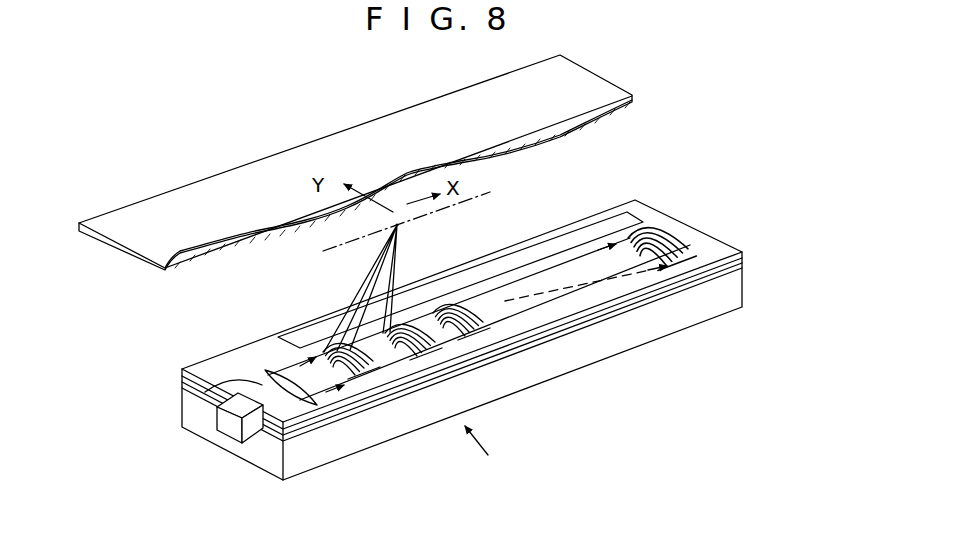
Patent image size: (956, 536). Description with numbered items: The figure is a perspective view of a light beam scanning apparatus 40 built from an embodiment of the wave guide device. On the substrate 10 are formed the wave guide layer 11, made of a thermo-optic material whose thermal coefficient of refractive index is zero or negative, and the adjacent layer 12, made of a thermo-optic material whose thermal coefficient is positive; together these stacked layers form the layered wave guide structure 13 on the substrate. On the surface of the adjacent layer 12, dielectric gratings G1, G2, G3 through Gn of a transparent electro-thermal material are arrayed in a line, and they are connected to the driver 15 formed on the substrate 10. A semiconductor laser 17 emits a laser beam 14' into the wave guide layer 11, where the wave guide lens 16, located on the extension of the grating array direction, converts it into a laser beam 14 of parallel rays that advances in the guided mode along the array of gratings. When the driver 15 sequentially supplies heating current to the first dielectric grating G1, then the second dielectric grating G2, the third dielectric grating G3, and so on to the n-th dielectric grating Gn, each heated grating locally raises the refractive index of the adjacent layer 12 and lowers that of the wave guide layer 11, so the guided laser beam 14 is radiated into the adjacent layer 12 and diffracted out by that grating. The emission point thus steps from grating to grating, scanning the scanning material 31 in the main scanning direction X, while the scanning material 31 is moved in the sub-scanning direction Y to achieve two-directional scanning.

The substrate 10 is at (258, 458).
The wave guide layer 11 is at (293, 437).
The adjacent layer 12 is at (297, 422).
The layered waveguide structure 13 is at (462, 392).
The laser beam 14 is at (470, 319).
The laser beam 14' is at (195, 383).
The driver 15 is at (577, 237).
The wave guide lens 16 is at (268, 365).
The semiconductor laser 17 is at (228, 427).
The scanning material 31 is at (413, 158).
The light beam scanning apparatus 40 is at (487, 454).
The first dielectric grating G1 is at (393, 357).
The second dielectric grating G2 is at (462, 340).
The third dielectric grating G3 is at (528, 328).
The n-th dielectric grating Gn is at (680, 240).